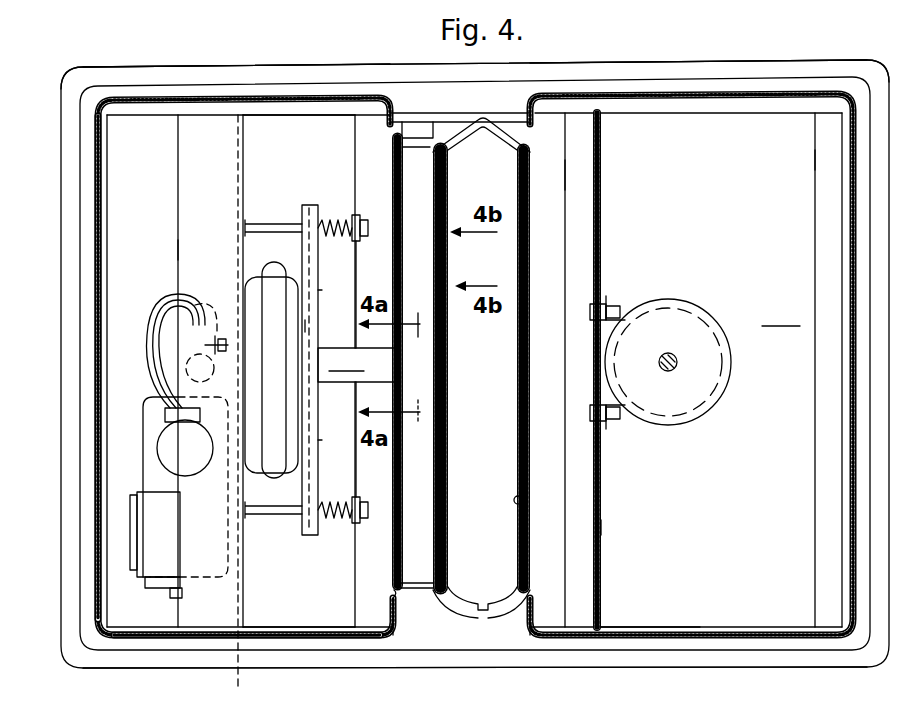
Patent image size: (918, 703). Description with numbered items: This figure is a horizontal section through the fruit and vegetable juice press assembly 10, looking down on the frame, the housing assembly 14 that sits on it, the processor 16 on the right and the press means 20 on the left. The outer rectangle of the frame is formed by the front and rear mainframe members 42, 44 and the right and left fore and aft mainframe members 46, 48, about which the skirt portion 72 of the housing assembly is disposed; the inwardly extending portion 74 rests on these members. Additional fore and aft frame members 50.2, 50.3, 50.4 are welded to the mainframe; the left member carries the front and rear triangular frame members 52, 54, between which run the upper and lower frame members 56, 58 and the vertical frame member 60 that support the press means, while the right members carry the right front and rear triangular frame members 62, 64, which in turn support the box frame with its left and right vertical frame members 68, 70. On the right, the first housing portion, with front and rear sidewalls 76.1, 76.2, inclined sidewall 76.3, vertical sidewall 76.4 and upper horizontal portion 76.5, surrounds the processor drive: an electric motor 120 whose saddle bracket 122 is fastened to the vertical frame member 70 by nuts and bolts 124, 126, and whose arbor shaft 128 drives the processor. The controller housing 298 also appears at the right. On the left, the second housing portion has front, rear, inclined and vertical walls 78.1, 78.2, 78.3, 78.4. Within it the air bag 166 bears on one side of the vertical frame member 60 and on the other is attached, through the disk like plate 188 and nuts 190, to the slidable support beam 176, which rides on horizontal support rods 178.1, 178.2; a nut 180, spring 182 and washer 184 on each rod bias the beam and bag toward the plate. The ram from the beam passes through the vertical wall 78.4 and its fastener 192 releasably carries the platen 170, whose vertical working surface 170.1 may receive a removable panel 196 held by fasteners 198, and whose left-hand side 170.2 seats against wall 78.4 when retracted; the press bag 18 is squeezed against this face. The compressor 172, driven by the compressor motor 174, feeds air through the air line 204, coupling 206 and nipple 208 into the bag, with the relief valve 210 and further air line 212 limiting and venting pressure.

The fruit and vegetable juice press assembly 10 is at (822, 55).
The housing assembly 14 is at (140, 66).
The processor 16 is at (698, 140).
The press bag 18 is at (470, 605).
The press means 20 is at (210, 152).
The front mainframe member 42 is at (178, 618).
The rear mainframe member 44 is at (133, 118).
The right fore and aft mainframe member 46 is at (840, 212).
The left fore and aft mainframe member 48 is at (107, 202).
The additional fore and aft frame member 50.2 is at (353, 135).
The additional fore and aft frame member 50.3 is at (620, 174).
The additional fore and aft frame member 50.4 is at (815, 158).
The front triangular frame member 52 is at (300, 625).
The rear triangular frame member 54 is at (262, 125).
The upper frame member 56 is at (185, 223).
The lower frame member 58 is at (160, 251).
The vertical frame member 60 is at (224, 672).
The right front triangular frame member 62 is at (645, 627).
The right rear triangular frame member 64 is at (622, 118).
The left vertical frame member 68 is at (601, 215).
The right vertical frame member 70 is at (603, 527).
The skirt portion 72 is at (60, 92).
The inwardly extending portion 74 is at (746, 67).
The front sidewall 76.1 is at (795, 627).
The rear sidewall 76.2 is at (803, 100).
The right-hand inclined sidewall 76.3 is at (845, 362).
The left-hand vertically extending sidewall 76.4 is at (522, 500).
The upper horizontal portion 76.5 is at (752, 702).
The front wall 78.1 is at (150, 640).
The rear wall 78.2 is at (300, 97).
The left inclined wall 78.3 is at (99, 276).
The right vertical wall 78.4 is at (383, 556).
The electric motor 120 is at (697, 300).
The saddle bracket 122 is at (605, 300).
The nuts and bolts 124 is at (612, 305).
The nuts and bolts 126 is at (592, 310).
The arbor shaft 128 is at (683, 333).
The air bag 166 is at (285, 478).
The platen 170 is at (420, 136).
The vertical working surface 170.1 is at (428, 118).
The left-hand side of the platen 170.2 is at (393, 163).
The compressor 172 is at (145, 453).
The compressor motor 174 is at (145, 570).
The slidable support beam 176 is at (302, 246).
The horizontal support rod 178.1 is at (272, 518).
The horizontal support rod 178.2 is at (268, 224).
The nut 180 is at (356, 243).
The spring 182 is at (345, 215).
The washer 184 is at (366, 219).
The disk like plate 188 is at (305, 326).
The nuts 190 is at (337, 362).
The fastener 192 is at (398, 368).
The removable panel 196 is at (455, 186).
The fasteners 198 is at (452, 255).
The air line 204 is at (170, 361).
The coupling 206 is at (182, 383).
The nipple 208 is at (225, 295).
The relief valve 210 is at (176, 341).
The further air line 212 is at (157, 318).
The controller housing 298 is at (781, 315).